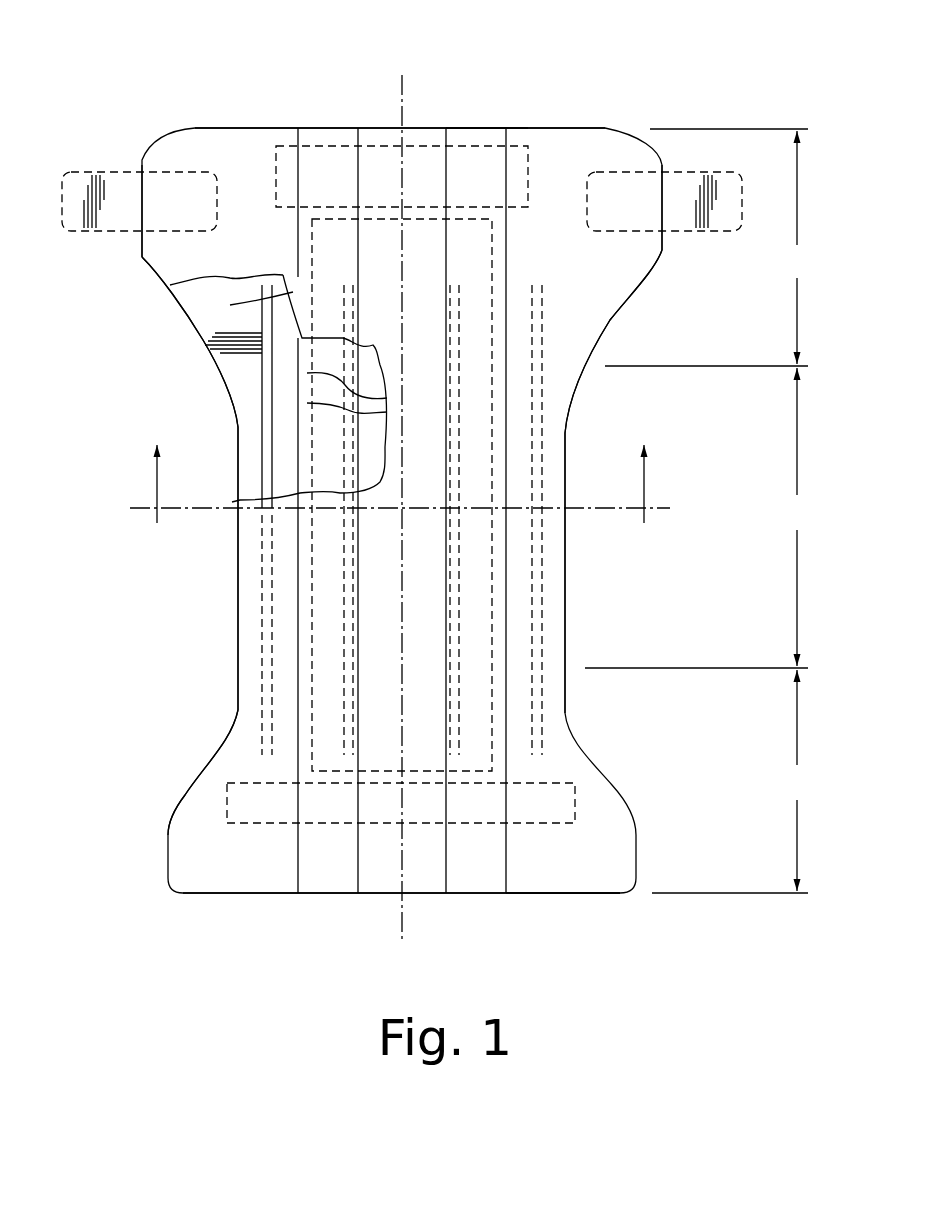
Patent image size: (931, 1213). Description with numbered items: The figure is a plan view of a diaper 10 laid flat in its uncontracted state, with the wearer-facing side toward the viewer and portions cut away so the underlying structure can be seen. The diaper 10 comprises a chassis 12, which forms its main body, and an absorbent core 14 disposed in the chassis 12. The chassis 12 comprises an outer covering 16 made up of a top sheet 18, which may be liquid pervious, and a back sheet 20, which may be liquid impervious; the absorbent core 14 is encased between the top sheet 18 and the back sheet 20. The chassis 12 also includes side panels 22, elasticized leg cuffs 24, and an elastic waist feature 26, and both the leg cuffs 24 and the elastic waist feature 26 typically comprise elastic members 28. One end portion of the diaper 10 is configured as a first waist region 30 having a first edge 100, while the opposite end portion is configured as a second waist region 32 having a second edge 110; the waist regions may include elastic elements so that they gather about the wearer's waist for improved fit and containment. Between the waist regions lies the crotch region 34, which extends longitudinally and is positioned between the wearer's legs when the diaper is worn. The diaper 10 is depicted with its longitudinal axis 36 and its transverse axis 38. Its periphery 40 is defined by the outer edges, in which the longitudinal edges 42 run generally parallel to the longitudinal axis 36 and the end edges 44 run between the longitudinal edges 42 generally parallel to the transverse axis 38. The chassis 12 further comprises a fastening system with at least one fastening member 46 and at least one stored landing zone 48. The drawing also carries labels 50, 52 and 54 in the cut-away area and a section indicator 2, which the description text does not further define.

The diaper 10 is at (650, 106).
The chassis 12 is at (410, 673).
The absorbent core 14 is at (302, 432).
The outer covering 16 is at (167, 256).
The top sheet 18 is at (378, 668).
The back sheet 20 is at (183, 295).
The side panels 22 is at (213, 167).
The elasticized leg cuffs 24 is at (298, 628).
The elastic waist feature 26 is at (422, 155).
The elastic members 28 is at (342, 285).
The first waist region 30 is at (731, 781).
The second waist region 32 is at (708, 247).
The crotch region 34 is at (698, 518).
The longitudinal axis 36 is at (400, 925).
The transverse axis 38 is at (578, 508).
The periphery 40 is at (198, 778).
The longitudinal edges 42 is at (237, 680).
The end edges 44 is at (343, 128).
The fastening member 46 is at (128, 185).
The stored landing zone 48 is at (272, 812).
The cuff elastics 50 is at (297, 322).
The cuff proximal edge 52 is at (230, 305).
The cuff elastic gathers 54 is at (347, 350).
The first edge 100 is at (543, 894).
The second edge 110 is at (505, 128).
The section line 2 is at (400, 461).